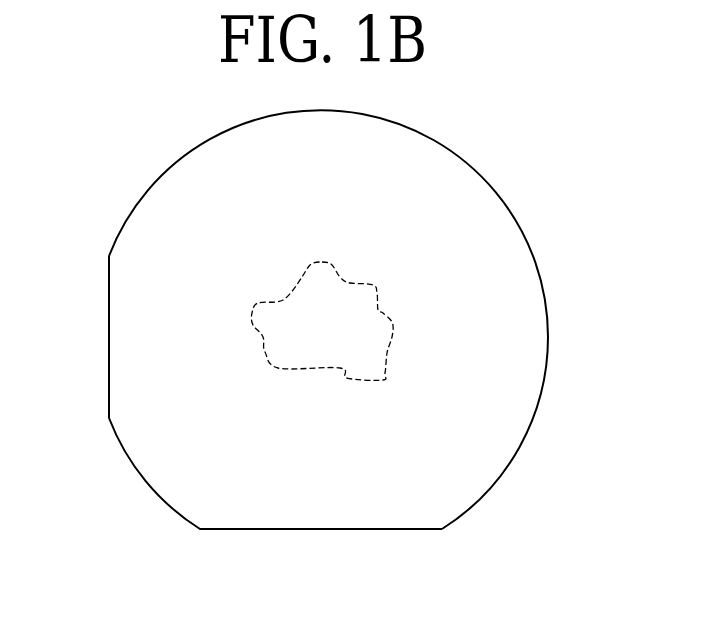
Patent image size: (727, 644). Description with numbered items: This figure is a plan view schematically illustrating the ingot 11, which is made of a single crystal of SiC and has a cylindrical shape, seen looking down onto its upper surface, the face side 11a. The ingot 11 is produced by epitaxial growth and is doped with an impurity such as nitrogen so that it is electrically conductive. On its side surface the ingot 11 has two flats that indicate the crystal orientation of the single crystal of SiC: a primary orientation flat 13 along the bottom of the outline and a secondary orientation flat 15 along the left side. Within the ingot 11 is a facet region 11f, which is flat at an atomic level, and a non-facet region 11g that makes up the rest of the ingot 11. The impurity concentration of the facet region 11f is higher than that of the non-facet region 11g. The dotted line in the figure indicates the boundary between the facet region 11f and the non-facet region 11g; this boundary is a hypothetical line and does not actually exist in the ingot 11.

The ingot 11 is at (323, 328).
The face side 11a is at (471, 192).
The facet region 11f is at (362, 350).
The non-facet region 11g is at (485, 437).
The primary orientation flat 13 is at (327, 530).
The secondary orientation flat 15 is at (109, 350).